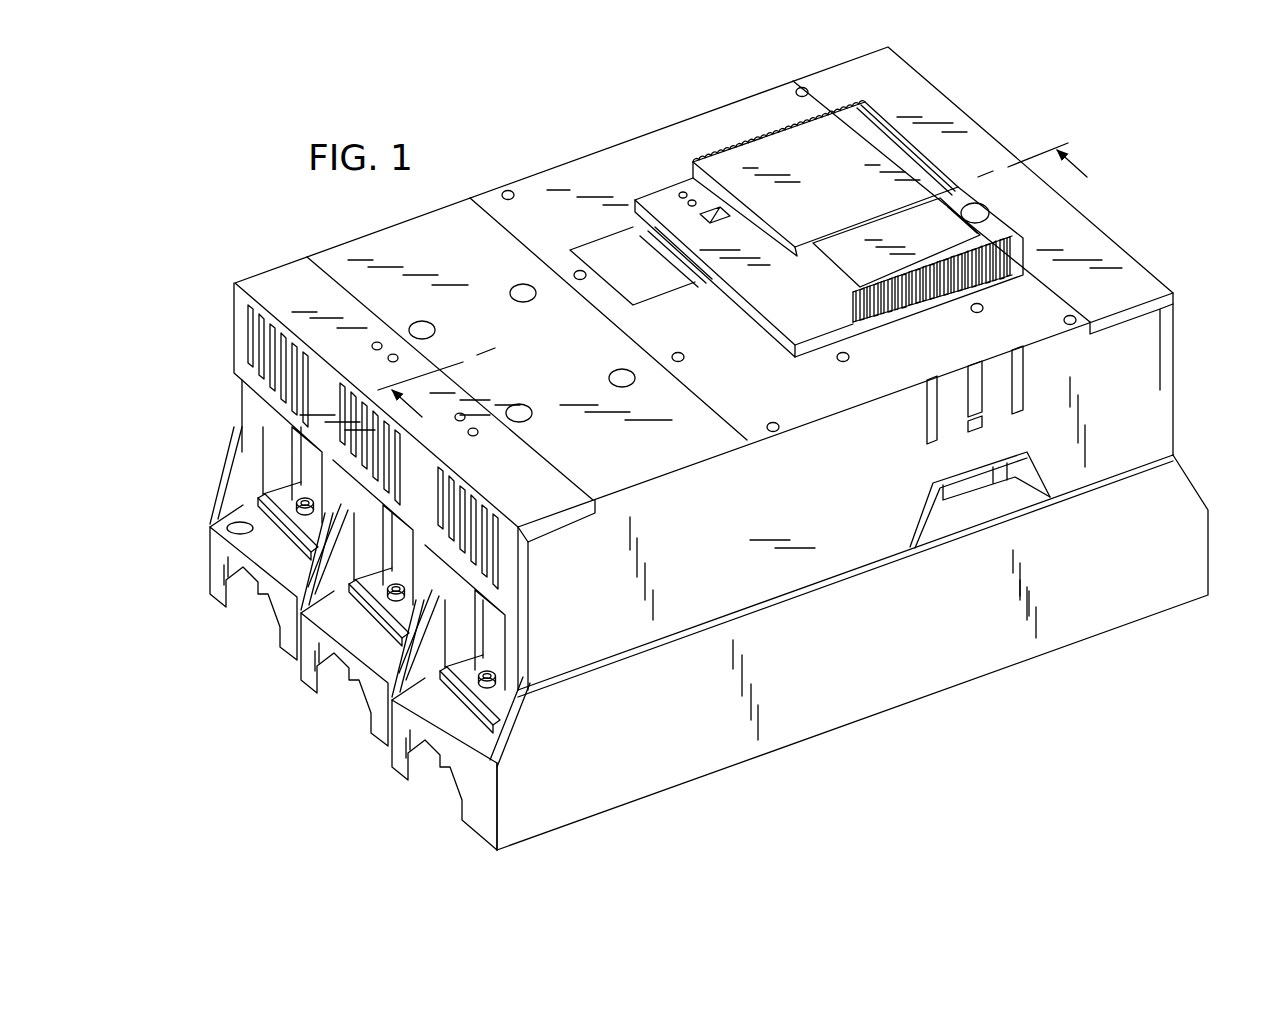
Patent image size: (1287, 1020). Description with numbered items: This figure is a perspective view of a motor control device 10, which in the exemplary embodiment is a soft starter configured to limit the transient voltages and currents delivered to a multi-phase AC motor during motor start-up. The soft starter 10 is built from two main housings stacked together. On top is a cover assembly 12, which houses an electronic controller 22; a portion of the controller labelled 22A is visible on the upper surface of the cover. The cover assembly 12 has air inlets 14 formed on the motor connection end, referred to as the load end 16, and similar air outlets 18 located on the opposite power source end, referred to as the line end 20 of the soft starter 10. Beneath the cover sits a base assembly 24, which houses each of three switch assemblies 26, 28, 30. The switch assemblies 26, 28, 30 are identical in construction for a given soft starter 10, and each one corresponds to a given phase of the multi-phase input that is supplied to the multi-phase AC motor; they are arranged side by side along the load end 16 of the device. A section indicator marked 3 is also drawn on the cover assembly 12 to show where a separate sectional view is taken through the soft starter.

The motor control device 10 is at (1117, 120).
The cover assembly 12 is at (778, 536).
The air inlets 14 is at (258, 417).
The load end 16 is at (373, 638).
The air outlets 18 is at (1186, 342).
The line end 20 is at (873, 652).
The electronic controller 22 is at (788, 229).
The trip unit cover 22A is at (842, 189).
The base assembly 24 is at (856, 671).
The switch assembly 26 is at (518, 698).
The switch assembly 28 is at (403, 618).
The switch assembly 30 is at (295, 500).
The section line FIG. 3 is at (729, 270).